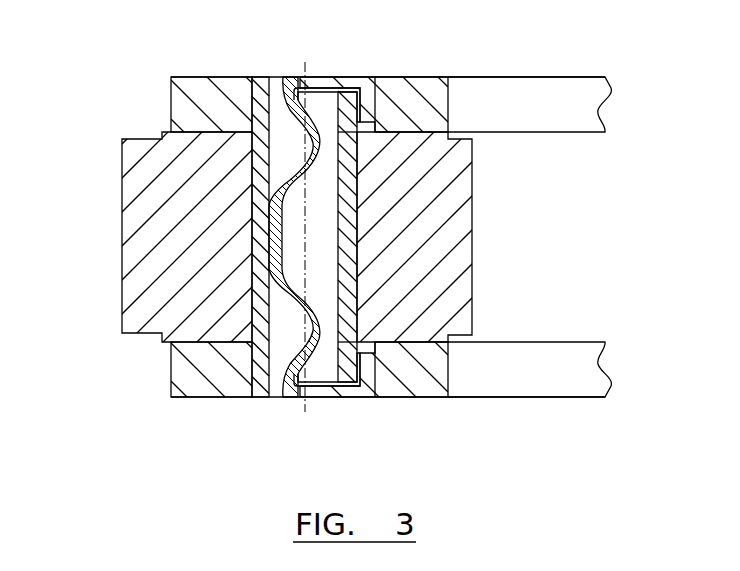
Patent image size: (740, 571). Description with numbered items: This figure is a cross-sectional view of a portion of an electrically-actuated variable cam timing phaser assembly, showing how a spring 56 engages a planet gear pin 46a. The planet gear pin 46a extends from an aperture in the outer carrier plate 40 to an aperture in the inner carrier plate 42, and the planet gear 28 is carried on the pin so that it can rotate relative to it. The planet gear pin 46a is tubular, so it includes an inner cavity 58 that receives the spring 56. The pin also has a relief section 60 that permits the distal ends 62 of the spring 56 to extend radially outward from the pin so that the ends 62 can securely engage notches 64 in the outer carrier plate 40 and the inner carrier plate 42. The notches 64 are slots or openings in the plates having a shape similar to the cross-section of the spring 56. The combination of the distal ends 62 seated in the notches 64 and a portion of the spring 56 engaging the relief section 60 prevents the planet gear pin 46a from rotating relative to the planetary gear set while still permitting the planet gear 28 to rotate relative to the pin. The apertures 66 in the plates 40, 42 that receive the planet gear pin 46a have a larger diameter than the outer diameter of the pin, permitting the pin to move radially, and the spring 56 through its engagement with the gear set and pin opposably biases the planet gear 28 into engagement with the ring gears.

The planet gear 28 is at (170, 232).
The outer carrier plate 40 is at (547, 92).
The inner carrier plate 42 is at (546, 375).
The planet gear pin 46a is at (255, 363).
The spring 56 is at (288, 232).
The inner cavity 58 is at (280, 72).
The relief section 60 is at (330, 90).
The distal ends 62 is at (316, 72).
The notches 64 is at (397, 88).
The apertures 66 is at (232, 77).